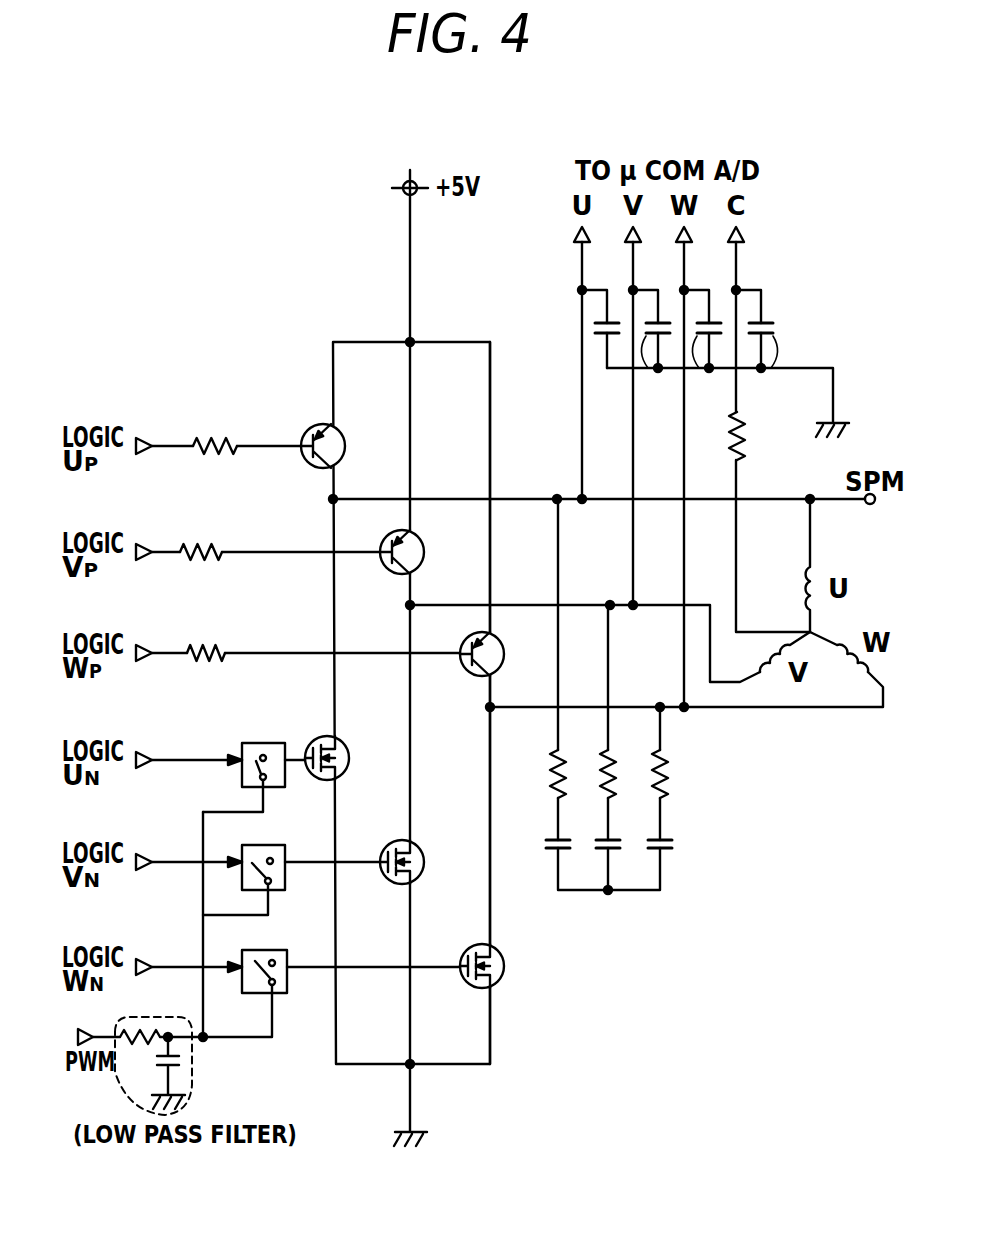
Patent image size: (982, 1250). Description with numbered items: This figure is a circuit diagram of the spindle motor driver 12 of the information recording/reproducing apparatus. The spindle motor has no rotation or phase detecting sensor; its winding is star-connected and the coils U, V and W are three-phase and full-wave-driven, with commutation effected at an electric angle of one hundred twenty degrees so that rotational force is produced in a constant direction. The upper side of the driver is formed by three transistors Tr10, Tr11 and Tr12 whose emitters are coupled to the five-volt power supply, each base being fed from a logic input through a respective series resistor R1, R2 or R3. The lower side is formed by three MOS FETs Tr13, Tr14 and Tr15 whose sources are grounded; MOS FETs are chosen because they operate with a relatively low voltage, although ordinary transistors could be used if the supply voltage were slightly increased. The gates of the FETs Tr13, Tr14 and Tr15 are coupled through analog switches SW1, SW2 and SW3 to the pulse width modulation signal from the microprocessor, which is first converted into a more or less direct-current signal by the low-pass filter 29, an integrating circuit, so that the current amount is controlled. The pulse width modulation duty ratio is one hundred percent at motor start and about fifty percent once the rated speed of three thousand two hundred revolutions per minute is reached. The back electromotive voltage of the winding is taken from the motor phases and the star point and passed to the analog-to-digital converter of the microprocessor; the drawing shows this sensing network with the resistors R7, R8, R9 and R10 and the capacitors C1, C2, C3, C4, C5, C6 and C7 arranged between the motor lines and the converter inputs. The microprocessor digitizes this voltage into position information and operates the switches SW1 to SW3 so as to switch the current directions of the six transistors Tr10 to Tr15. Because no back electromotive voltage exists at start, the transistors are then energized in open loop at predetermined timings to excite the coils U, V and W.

The spindle motor driver 12 is at (308, 300).
The low-pass filter 29 is at (193, 1083).
The resistor R1 is at (215, 433).
The resistor R2 is at (201, 539).
The resistor R3 is at (206, 640).
The resistor R7 is at (575, 774).
The resistor R8 is at (625, 774).
The resistor R9 is at (676, 774).
The resistor R10 is at (758, 436).
The capacitor C1 is at (610, 329).
The capacitor C2 is at (651, 347).
The capacitor C3 is at (702, 347).
The capacitor C4 is at (768, 347).
The capacitor C5 is at (568, 862).
The capacitor C6 is at (618, 862).
The capacitor C7 is at (669, 862).
The transistor Tr10 is at (343, 442).
The transistor Tr11 is at (424, 552).
The transistor Tr12 is at (504, 664).
The MOS FET Tr13 is at (347, 769).
The MOS FET Tr14 is at (425, 862).
The MOS FET Tr15 is at (504, 969).
The analog switch SW1 is at (261, 750).
The analog switch SW2 is at (261, 853).
The analog switch SW3 is at (262, 957).